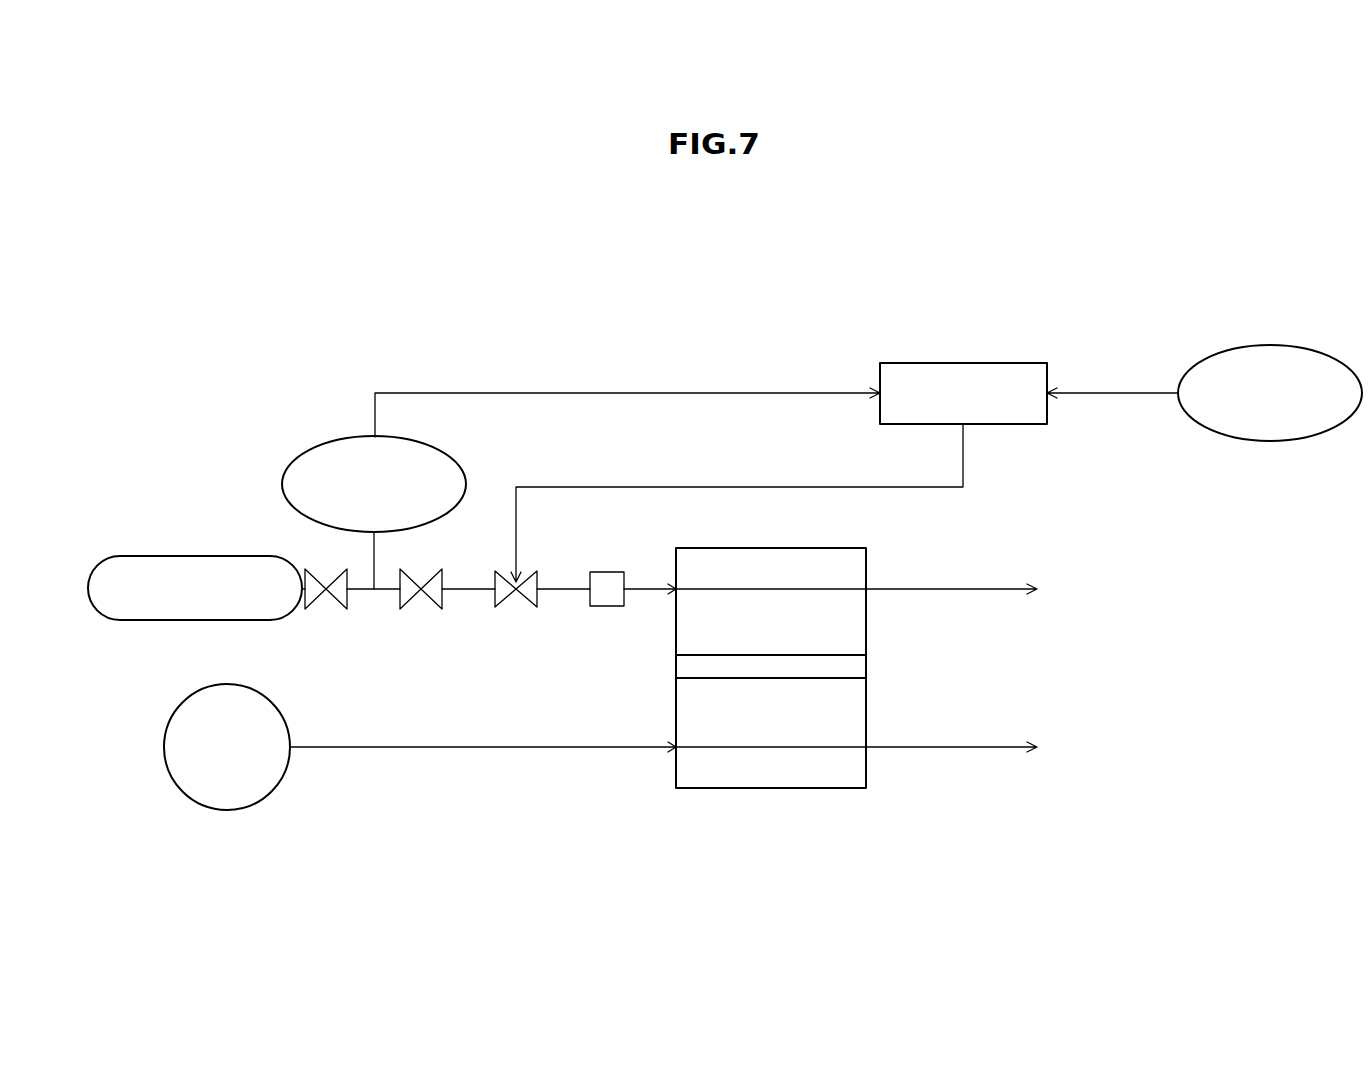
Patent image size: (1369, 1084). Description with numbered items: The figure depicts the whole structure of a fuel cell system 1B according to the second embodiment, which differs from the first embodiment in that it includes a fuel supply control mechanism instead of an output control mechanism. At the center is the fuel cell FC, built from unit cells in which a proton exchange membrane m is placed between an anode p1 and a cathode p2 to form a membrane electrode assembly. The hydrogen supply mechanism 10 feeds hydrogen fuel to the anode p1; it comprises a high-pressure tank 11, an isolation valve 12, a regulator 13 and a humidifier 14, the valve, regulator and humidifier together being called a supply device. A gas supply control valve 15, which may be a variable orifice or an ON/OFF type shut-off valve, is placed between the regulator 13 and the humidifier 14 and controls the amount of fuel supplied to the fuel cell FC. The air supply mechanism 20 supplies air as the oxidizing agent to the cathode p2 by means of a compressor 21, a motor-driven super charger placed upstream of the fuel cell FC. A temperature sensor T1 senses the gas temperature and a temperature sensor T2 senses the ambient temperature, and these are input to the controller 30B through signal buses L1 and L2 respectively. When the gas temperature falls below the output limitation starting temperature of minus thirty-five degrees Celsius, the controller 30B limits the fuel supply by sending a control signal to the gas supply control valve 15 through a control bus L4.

The fuel cell system 1B is at (697, 344).
The hydrogen supply mechanism 10 is at (114, 517).
The high-pressure tank 11 is at (193, 556).
The isolation valve 12 is at (326, 599).
The regulator 13 is at (421, 599).
The humidifier 14 is at (610, 606).
The gas supply control valve 15 is at (516, 599).
The air supply mechanism 20 is at (144, 687).
The compressor 21 is at (227, 779).
The controller 30B is at (962, 363).
The temperature sensor T1 is at (460, 452).
The temperature sensor T2 is at (1230, 347).
The signal bus L1 is at (553, 392).
The signal bus L2 is at (1119, 392).
The control bus L4 is at (720, 487).
The fuel cell FC is at (906, 659).
The anode p1 is at (855, 620).
The proton exchange membrane m is at (855, 668).
The cathode p2 is at (855, 716).